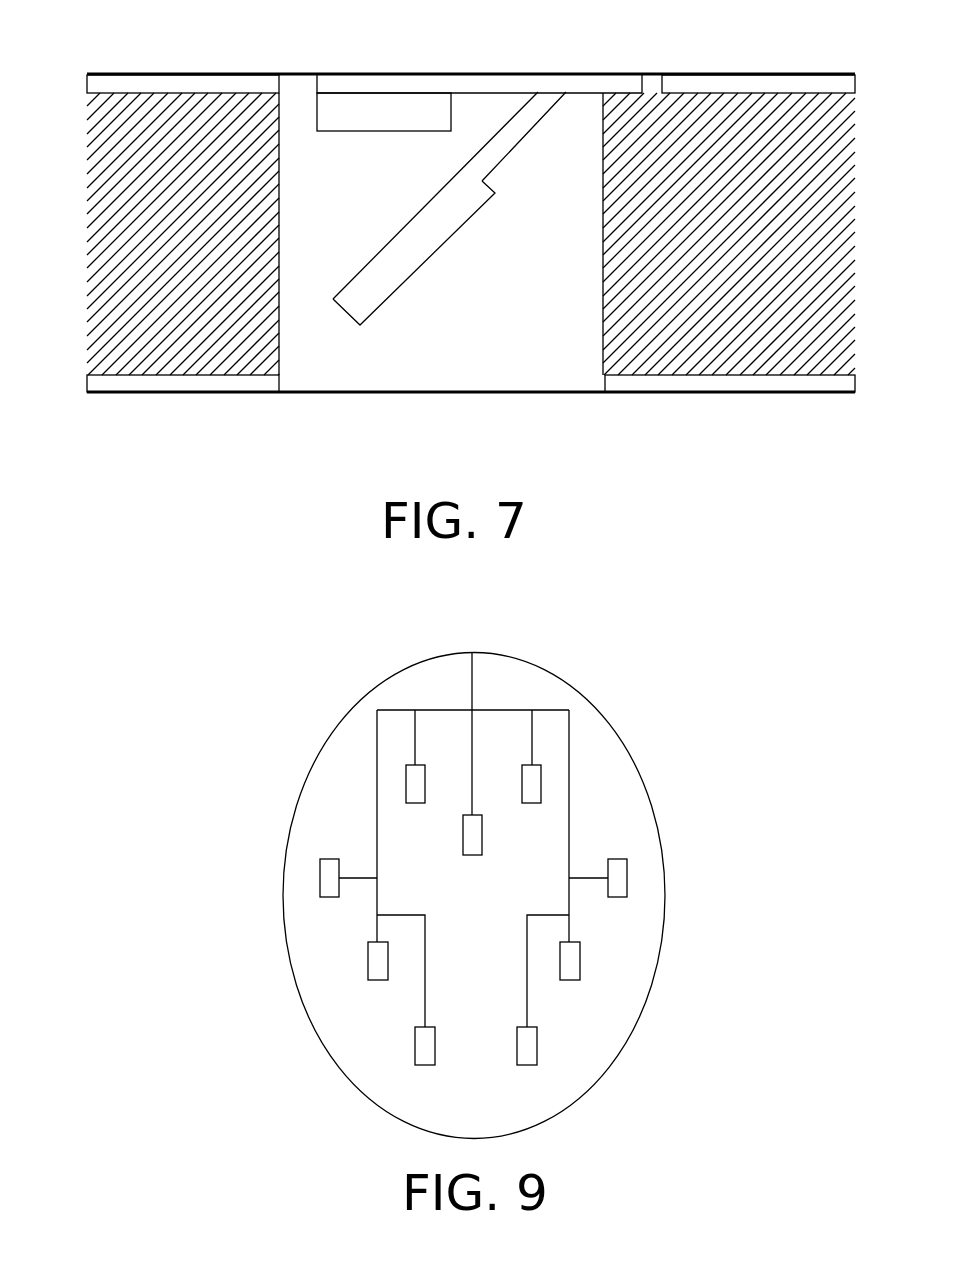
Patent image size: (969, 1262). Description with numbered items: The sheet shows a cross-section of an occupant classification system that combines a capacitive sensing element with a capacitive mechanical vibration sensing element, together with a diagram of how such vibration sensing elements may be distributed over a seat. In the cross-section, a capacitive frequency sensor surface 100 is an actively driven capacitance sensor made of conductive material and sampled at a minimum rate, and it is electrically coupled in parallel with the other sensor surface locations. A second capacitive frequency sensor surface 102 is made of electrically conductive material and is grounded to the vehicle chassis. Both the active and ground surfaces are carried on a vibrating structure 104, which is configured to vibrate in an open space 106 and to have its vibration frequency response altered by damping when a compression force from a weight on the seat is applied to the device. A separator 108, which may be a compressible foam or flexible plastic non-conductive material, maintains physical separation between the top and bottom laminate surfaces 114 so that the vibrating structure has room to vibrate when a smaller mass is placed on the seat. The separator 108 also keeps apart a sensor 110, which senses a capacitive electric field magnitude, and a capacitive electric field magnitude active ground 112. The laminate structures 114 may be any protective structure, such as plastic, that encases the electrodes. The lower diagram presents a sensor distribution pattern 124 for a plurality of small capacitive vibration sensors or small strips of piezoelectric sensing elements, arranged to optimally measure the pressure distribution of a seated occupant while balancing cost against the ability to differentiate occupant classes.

In FIG. 7, the capacitive frequency sensor surface 100 is at (393, 108).
In FIG. 7, the capacitive frequency sensor surface 102 is at (423, 245).
In FIG. 7, the vibrating structure 104 is at (515, 133).
In FIG. 7, the open space 106 is at (338, 355).
In FIG. 7, the separator 108 is at (115, 190).
In FIG. 7, the sensor 110 is at (192, 83).
In FIG. 7, the capacitive electric field magnitude active ground 112 is at (155, 383).
In FIG. 7, the laminate surfaces 114 is at (297, 76).
In FIG. 9, the sensor distribution pattern 124 is at (262, 741).